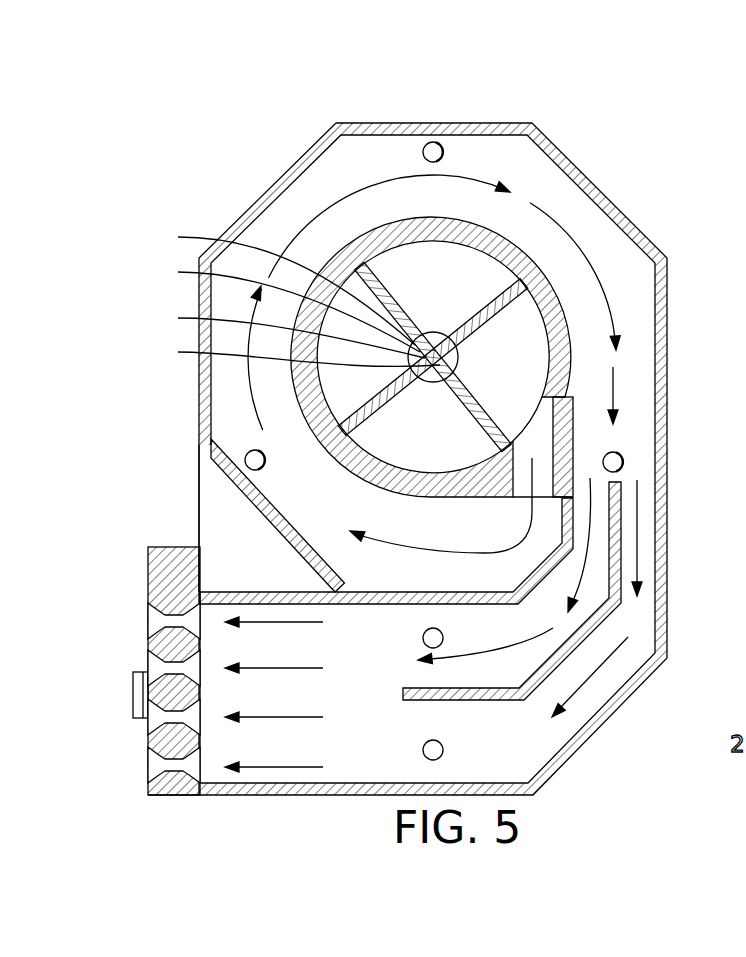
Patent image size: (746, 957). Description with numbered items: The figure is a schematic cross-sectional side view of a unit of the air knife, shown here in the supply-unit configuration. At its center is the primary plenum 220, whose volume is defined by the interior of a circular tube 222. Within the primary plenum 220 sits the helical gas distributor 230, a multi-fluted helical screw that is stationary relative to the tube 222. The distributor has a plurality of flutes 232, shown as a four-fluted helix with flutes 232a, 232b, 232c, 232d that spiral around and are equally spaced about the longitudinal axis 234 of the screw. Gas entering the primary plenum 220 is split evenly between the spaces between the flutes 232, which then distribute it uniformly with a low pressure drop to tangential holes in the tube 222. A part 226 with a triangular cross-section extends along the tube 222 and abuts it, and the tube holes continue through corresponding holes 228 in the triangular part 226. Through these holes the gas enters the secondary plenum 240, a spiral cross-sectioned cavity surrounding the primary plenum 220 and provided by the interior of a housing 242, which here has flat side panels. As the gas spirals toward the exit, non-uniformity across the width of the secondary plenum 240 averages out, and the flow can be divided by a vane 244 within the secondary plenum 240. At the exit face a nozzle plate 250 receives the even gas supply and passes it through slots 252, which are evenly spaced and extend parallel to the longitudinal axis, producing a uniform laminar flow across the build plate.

The primary plenum 220 is at (523, 318).
The circular tube 222 is at (355, 245).
The triangular part 226 is at (560, 418).
The holes through the triangular part 228 is at (600, 455).
The helical gas distributor 230 is at (493, 294).
The flutes 232 is at (245, 294).
The first flute 232a is at (266, 284).
The second flute 232b is at (268, 305).
The third flute 232c is at (271, 332).
The fourth flute 232d is at (278, 351).
The longitudinal axis 234 is at (460, 352).
The secondary plenum 240 is at (553, 192).
The housing 242 is at (487, 123).
The vane 244 is at (572, 660).
The nozzle plate 250 is at (155, 745).
The slots 252 is at (155, 620).